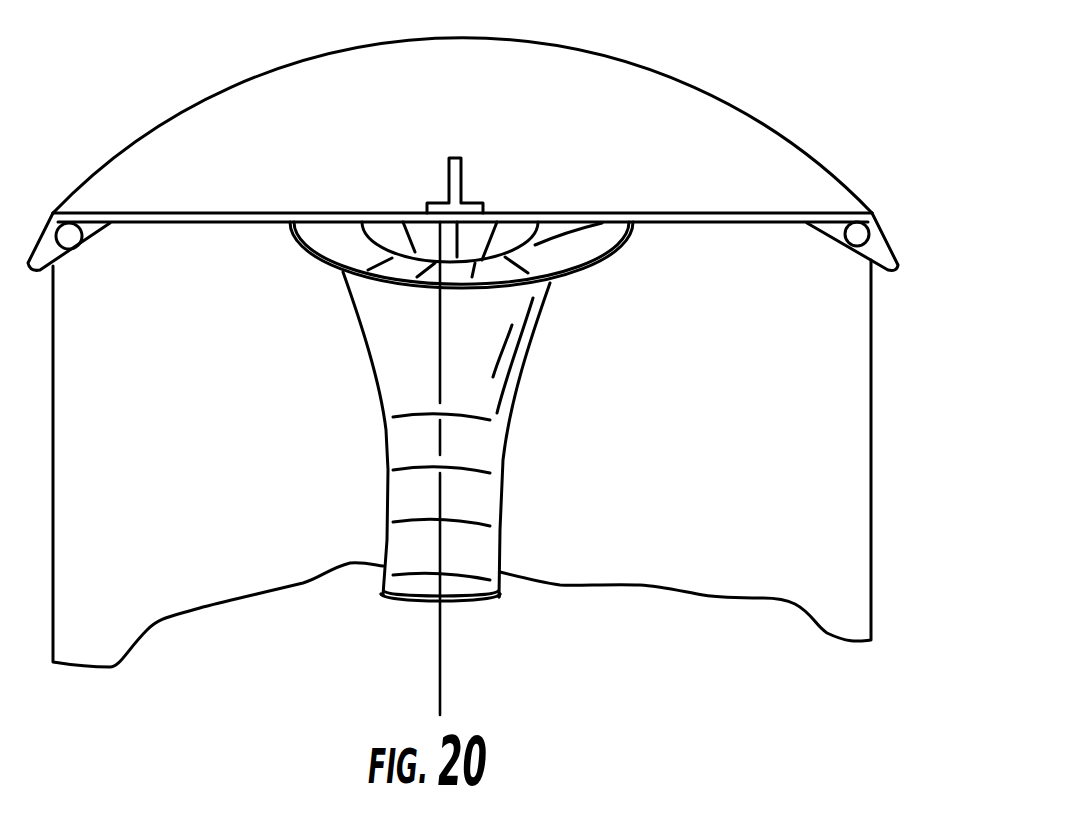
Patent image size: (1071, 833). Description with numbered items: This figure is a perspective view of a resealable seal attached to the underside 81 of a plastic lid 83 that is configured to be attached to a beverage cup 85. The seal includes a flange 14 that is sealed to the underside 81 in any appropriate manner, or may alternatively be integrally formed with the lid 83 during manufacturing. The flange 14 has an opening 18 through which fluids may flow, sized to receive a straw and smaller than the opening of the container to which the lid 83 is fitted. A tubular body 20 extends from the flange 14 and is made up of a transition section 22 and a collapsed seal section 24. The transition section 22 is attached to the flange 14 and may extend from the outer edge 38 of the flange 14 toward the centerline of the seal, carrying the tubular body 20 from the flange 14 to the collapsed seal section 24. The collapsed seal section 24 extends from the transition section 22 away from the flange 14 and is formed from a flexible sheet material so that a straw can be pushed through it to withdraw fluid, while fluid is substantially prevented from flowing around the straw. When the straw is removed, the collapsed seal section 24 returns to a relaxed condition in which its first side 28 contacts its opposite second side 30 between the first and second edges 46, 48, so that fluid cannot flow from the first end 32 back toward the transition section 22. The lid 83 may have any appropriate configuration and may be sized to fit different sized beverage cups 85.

The flange 14 is at (598, 263).
The opening 18 is at (410, 226).
The tubular body 20 is at (330, 270).
The transition section 22 is at (570, 282).
The collapsed seal section 24 is at (518, 453).
The first side 28 is at (424, 563).
The second side 30 is at (407, 602).
The first end 32 is at (478, 603).
The outer edge 38 is at (633, 223).
The first edge 46 is at (390, 500).
The second edge 48 is at (502, 495).
The underside 81 is at (178, 223).
The lid 83 is at (780, 122).
The beverage cup 85 is at (863, 473).